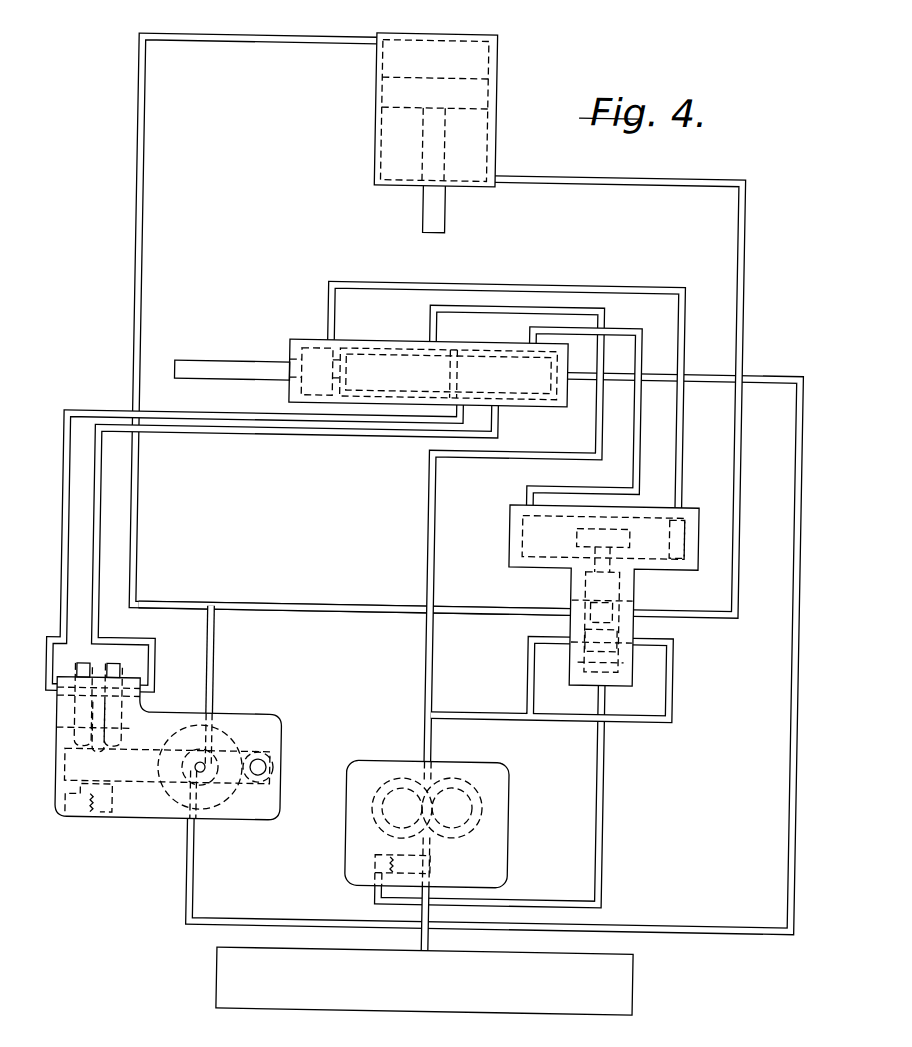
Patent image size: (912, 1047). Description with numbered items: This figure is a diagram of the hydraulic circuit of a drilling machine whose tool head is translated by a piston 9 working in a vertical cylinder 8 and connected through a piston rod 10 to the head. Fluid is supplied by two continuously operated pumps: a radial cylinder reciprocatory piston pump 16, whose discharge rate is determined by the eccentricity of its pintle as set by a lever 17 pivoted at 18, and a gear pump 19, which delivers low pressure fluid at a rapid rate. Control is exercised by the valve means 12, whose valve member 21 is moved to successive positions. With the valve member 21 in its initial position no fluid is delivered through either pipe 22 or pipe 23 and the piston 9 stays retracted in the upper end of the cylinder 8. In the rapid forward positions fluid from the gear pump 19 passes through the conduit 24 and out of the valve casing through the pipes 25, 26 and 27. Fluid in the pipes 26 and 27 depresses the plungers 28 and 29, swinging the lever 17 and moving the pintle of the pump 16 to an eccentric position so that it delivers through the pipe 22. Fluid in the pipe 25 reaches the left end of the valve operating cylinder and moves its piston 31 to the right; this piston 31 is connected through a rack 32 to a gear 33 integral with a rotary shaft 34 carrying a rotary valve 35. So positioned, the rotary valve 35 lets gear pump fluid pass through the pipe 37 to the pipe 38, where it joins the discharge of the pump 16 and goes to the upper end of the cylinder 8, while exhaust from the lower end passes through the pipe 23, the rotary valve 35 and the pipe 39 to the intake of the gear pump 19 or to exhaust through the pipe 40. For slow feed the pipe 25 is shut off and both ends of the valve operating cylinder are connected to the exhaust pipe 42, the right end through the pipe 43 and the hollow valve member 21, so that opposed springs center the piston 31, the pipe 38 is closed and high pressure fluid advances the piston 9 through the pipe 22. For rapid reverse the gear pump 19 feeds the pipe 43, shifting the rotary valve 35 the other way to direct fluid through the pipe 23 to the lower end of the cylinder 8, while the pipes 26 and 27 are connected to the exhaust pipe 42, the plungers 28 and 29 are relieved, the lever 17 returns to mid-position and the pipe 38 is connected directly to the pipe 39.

The cylinder 8 is at (454, 134).
The piston 9 is at (474, 93).
The piston rod 10 is at (440, 222).
The valve means 12 is at (371, 352).
The pump 16 is at (173, 762).
The lever 17 is at (149, 780).
The pivot 18 is at (274, 760).
The gear pump 19 is at (440, 841).
The valve member 21 is at (390, 358).
The pipe 22 is at (140, 157).
The pipe 23 is at (634, 177).
The conduit 24 is at (436, 512).
The pipe 25 is at (625, 329).
The pipe 26 is at (350, 438).
The pipe 27 is at (270, 417).
The plunger 28 is at (130, 706).
The plunger 29 is at (88, 710).
The piston 31 is at (658, 516).
The rack 32 is at (632, 534).
The gear 33 is at (621, 562).
The rotary shaft 34 is at (596, 565).
The rotary valve 35 is at (613, 641).
The pipe 37 is at (531, 671).
The pipe 38 is at (382, 617).
The pipe 39 is at (610, 763).
The pipe 40 is at (430, 906).
The exhaust pipe 42 is at (796, 592).
The pipe 43 is at (586, 288).